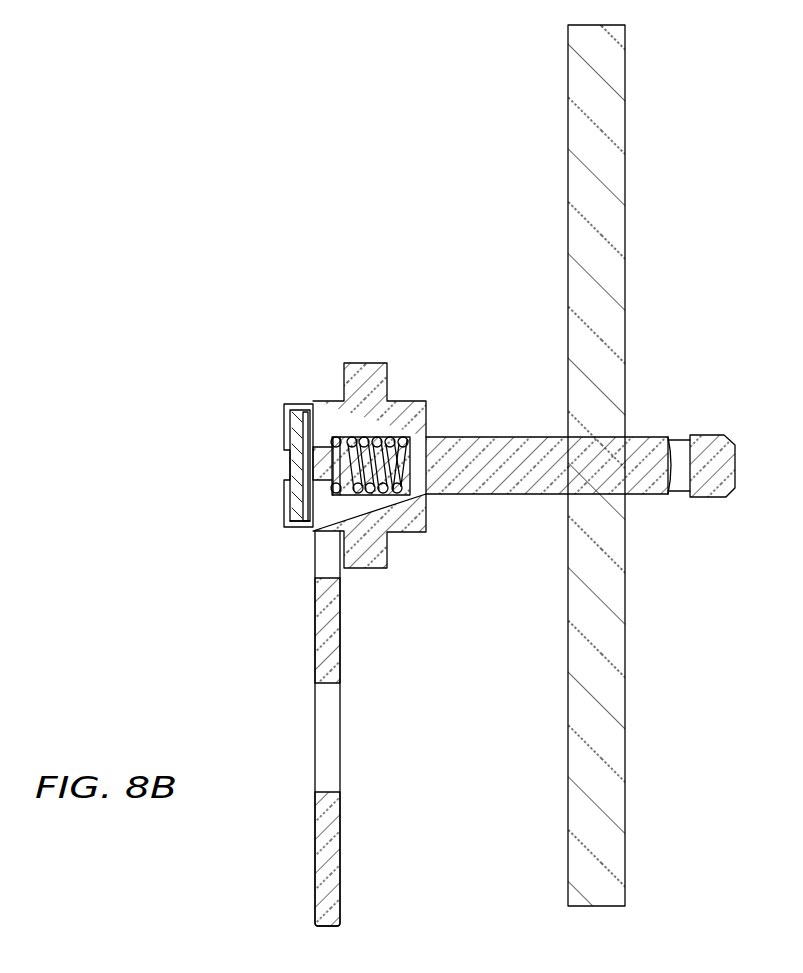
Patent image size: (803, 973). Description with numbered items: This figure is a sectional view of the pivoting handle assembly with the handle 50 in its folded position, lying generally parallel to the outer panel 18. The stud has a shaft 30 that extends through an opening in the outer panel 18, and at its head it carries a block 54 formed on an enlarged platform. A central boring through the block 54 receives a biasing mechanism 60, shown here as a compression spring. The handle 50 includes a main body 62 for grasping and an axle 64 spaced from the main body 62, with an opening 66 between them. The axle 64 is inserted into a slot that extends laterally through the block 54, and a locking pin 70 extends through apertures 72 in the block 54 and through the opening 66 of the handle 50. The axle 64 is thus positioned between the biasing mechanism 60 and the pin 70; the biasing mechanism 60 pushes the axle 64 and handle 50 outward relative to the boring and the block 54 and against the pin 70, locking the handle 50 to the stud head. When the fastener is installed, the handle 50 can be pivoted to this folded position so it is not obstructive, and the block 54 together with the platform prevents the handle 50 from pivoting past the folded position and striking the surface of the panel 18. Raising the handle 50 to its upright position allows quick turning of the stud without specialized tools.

The panel 18 is at (568, 183).
The shaft 30 is at (468, 437).
The handle 50 is at (297, 654).
The block 54 is at (323, 402).
The biasing mechanism 60 is at (386, 440).
The main body 62 is at (340, 832).
The axle 64 is at (333, 480).
The opening 66 is at (325, 560).
The locking pin 70 is at (300, 505).
The apertures 72 is at (302, 528).